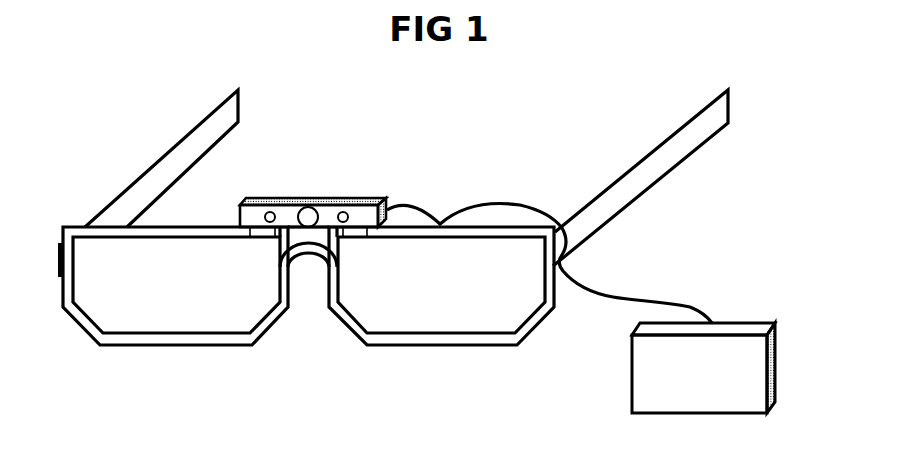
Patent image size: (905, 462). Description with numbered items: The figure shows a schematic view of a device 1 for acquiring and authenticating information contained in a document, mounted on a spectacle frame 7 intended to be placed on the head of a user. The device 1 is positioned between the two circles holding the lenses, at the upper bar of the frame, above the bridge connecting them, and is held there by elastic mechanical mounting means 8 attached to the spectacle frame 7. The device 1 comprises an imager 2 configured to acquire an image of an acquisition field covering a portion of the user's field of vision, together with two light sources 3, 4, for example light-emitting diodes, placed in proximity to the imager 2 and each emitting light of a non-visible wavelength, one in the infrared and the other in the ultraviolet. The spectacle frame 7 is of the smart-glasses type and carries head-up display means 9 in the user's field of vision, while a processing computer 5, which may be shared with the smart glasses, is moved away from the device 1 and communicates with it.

The device 1 is at (303, 99).
The imager 2 is at (313, 208).
The light source 3 is at (270, 212).
The light source 4 is at (343, 211).
The processing computer 5 is at (727, 328).
The spectacle frame 7 is at (582, 218).
The mounting means 8 is at (249, 229).
The head-up display means 9 is at (363, 300).